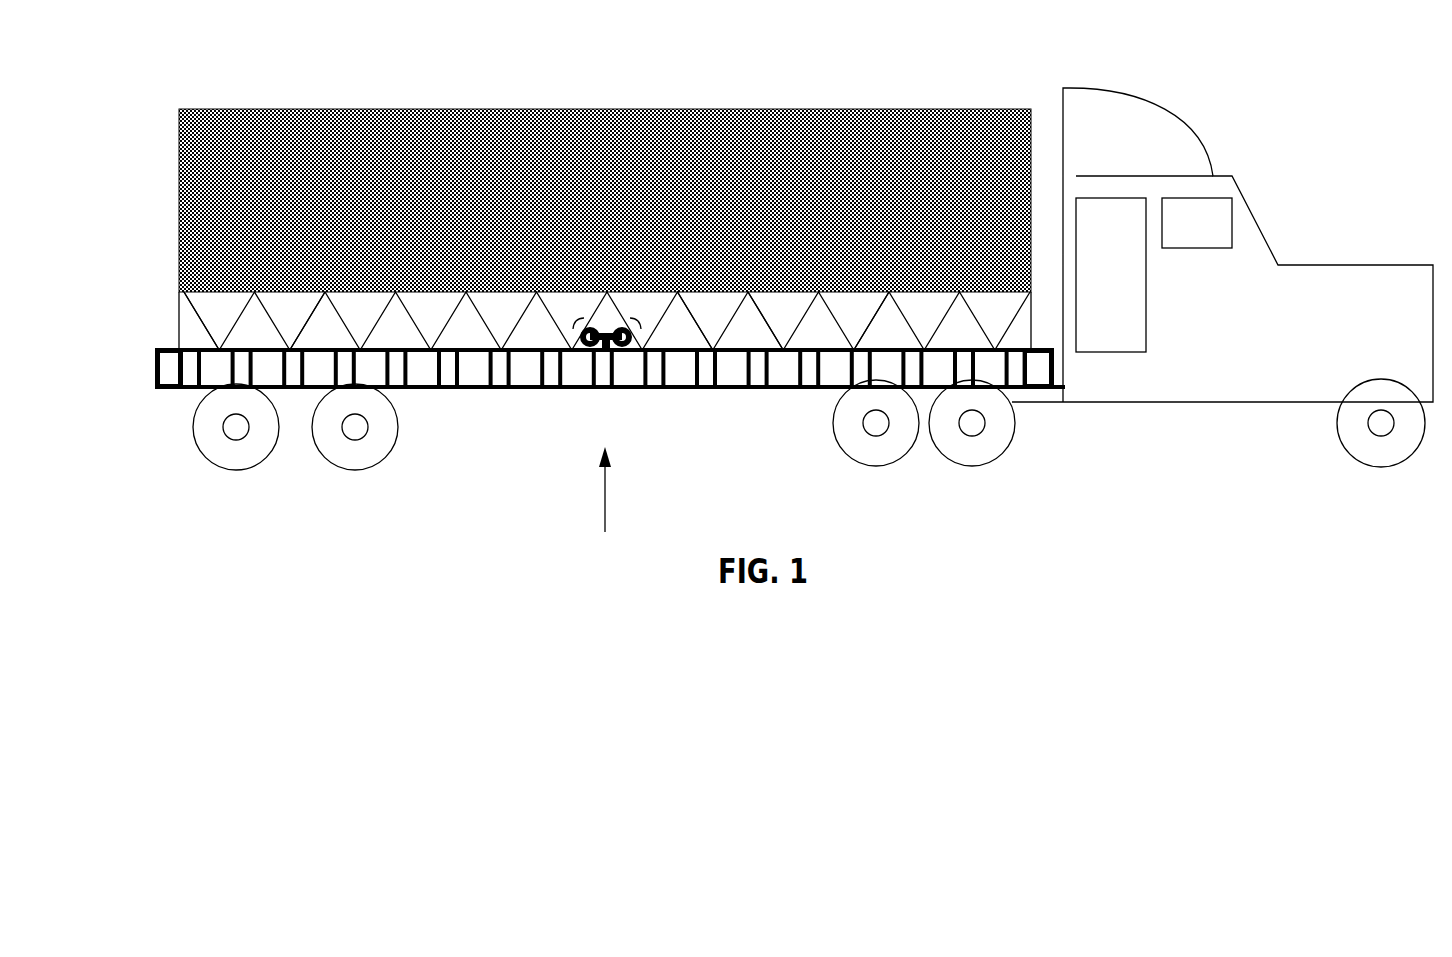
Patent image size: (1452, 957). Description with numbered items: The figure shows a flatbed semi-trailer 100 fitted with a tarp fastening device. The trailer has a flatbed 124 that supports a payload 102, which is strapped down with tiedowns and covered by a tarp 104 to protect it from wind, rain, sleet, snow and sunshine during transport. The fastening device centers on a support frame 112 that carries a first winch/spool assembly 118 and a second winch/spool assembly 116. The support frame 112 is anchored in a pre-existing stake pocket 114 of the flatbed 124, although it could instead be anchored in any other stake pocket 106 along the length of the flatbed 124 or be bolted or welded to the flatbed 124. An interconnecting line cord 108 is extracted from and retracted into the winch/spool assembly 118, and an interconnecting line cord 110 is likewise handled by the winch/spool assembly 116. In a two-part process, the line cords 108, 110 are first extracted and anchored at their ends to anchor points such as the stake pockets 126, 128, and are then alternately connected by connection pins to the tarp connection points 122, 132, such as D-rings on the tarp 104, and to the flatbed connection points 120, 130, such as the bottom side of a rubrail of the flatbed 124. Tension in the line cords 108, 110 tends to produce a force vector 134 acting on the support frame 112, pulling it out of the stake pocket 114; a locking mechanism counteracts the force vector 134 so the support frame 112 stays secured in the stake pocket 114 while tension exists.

The flatbed semi-trailer 100 is at (1358, 233).
The payload 102 is at (187, 320).
The tarp 104 is at (817, 143).
The stake pocket 106 is at (547, 375).
The interconnecting line cord 108 is at (482, 320).
The interconnecting line cord 110 is at (700, 332).
The support frame 112 is at (627, 234).
The stake pocket 114 is at (624, 388).
The second winch/spool assembly 116 is at (636, 318).
The first winch/spool assembly 118 is at (577, 318).
The flatbed connection point 120 is at (218, 347).
The tarp connection point 122 is at (328, 295).
The flatbed 124 is at (838, 365).
The stake pocket 126 is at (178, 357).
The stake pocket 128 is at (1025, 355).
The flatbed connection point 130 is at (785, 349).
The tarp connection point 132 is at (888, 296).
The force vector 134 is at (605, 507).